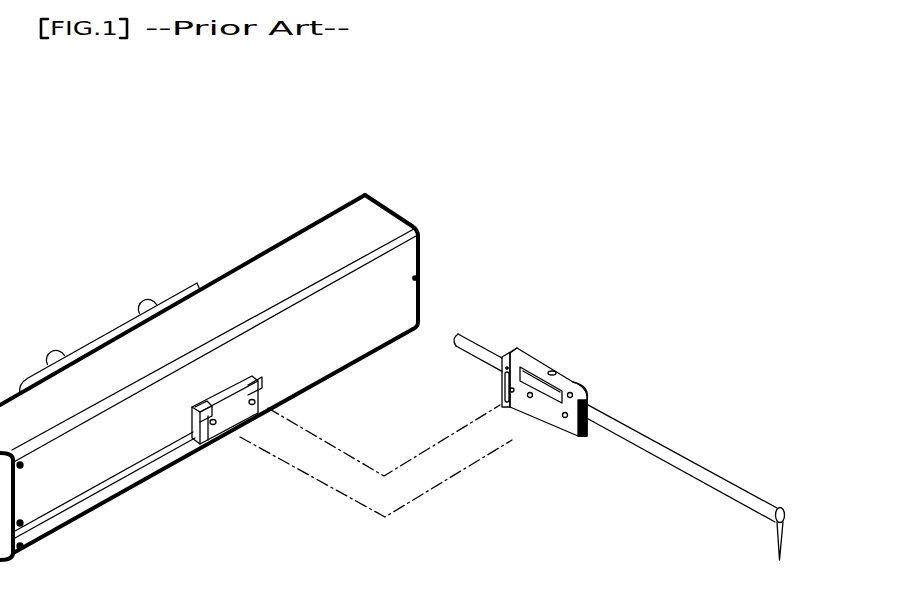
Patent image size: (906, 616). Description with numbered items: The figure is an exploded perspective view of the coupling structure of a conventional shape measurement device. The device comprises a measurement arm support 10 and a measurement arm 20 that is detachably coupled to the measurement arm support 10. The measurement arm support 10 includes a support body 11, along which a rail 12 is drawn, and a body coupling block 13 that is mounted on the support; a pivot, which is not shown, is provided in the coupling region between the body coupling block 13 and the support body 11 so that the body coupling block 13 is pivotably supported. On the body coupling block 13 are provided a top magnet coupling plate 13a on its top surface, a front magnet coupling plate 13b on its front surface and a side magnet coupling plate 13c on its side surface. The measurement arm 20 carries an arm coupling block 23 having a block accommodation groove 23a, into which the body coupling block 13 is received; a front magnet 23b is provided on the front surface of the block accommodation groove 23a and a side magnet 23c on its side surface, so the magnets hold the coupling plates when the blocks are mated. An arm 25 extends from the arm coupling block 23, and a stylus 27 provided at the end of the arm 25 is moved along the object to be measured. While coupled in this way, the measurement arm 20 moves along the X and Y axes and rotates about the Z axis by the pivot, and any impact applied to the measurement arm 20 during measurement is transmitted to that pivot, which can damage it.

The measurement arm support 10 is at (380, 168).
The support body 11 is at (270, 262).
The guide rail 12 is at (63, 518).
The body coupling block 13 is at (232, 386).
The top magnet coupling plate 13a is at (212, 445).
The front magnet coupling plate 13b is at (217, 425).
The side magnet coupling plate 13c is at (267, 392).
The measurement arm 20 is at (606, 521).
The arm coupling block 23 is at (540, 358).
The block accommodation groove 23a is at (545, 407).
The front magnet 23b is at (567, 420).
The side magnet 23c is at (503, 398).
The arm 25 is at (688, 457).
The stylus 27 is at (775, 548).